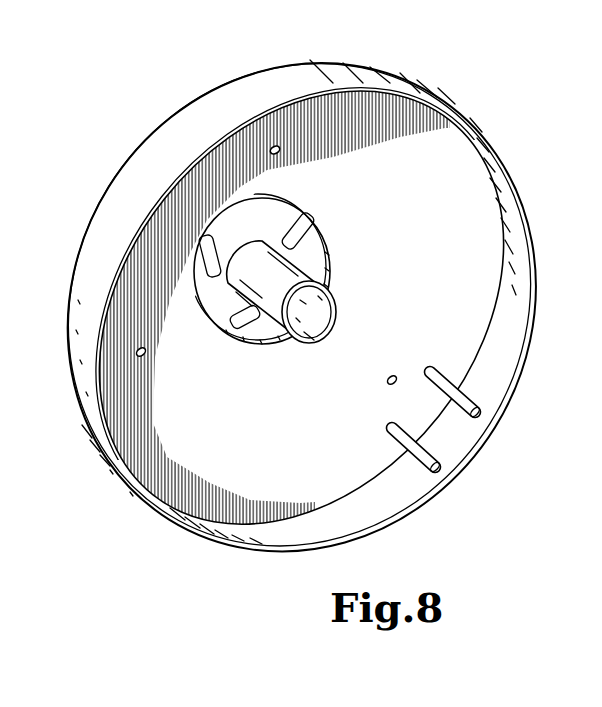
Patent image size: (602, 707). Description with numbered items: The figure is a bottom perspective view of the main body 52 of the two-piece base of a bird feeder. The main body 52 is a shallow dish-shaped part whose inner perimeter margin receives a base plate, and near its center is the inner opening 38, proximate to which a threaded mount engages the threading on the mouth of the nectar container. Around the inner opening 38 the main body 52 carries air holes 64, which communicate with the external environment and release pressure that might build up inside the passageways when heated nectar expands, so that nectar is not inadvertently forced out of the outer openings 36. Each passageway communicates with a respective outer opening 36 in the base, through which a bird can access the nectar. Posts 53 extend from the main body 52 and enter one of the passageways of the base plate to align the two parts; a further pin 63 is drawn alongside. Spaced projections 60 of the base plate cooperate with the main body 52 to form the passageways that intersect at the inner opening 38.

The main body 52 is at (301, 320).
The outer opening 36 is at (282, 153).
The air hole 64 is at (200, 257).
The inner opening 38 is at (332, 310).
The pin 63 is at (473, 408).
The post 53 is at (428, 458).
The spaced projection 60 is at (601, 668).